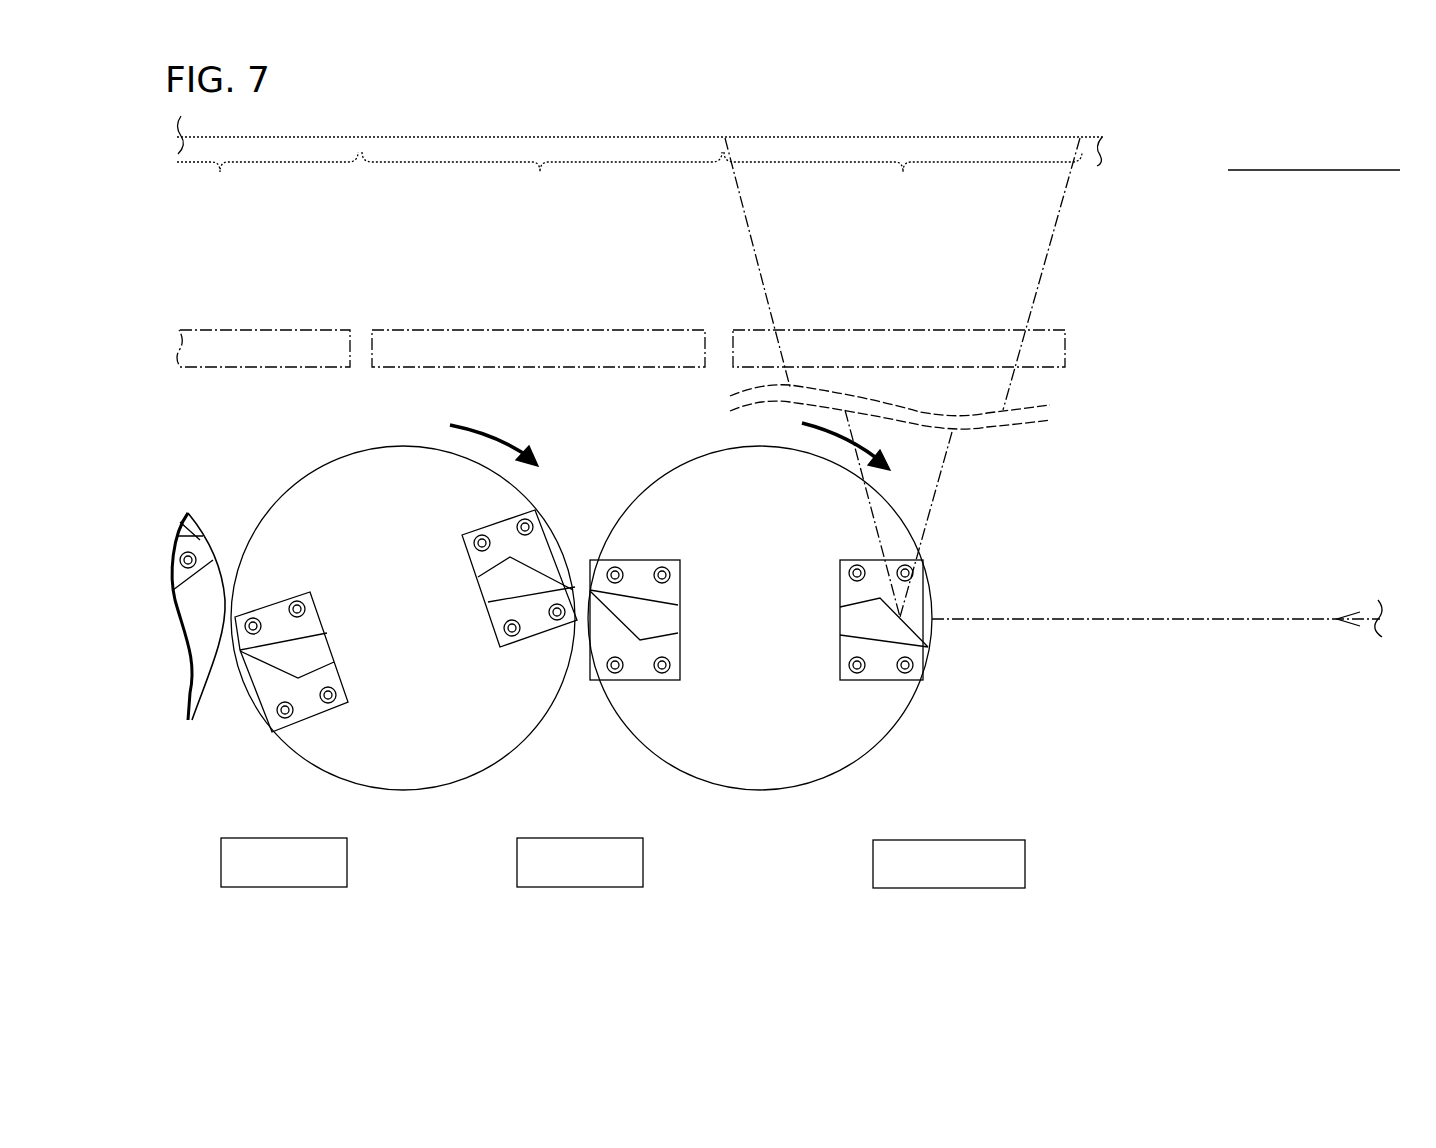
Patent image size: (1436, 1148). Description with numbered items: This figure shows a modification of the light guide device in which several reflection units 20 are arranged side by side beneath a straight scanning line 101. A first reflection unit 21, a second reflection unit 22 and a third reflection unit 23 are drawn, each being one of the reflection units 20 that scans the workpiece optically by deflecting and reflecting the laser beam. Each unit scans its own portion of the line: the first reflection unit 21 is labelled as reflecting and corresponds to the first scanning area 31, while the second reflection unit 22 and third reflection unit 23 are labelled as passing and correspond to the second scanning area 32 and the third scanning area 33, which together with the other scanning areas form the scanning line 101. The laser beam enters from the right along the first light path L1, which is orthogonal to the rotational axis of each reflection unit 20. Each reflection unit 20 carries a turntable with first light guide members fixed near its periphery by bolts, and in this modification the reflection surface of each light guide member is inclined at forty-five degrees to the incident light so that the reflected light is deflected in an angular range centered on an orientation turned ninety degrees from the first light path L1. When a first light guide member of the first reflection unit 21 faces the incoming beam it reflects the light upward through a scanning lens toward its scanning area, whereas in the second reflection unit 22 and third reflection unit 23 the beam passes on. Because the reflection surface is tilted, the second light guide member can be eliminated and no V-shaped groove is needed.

The scanning line 101 is at (1106, 167).
The first scanning area 31 is at (903, 184).
The second scanning area 32 is at (542, 184).
The third scanning area 33 is at (267, 184).
The first reflection unit 21 is at (795, 660).
The second reflection unit 22 is at (423, 661).
The third reflection unit 23 is at (257, 656).
The reflection unit 20 is at (596, 674).
The first light path L1 is at (1250, 621).